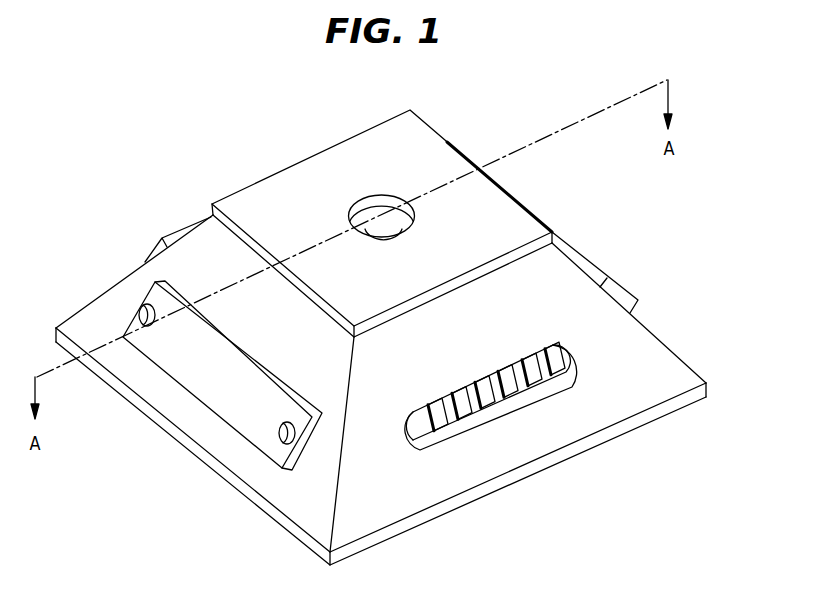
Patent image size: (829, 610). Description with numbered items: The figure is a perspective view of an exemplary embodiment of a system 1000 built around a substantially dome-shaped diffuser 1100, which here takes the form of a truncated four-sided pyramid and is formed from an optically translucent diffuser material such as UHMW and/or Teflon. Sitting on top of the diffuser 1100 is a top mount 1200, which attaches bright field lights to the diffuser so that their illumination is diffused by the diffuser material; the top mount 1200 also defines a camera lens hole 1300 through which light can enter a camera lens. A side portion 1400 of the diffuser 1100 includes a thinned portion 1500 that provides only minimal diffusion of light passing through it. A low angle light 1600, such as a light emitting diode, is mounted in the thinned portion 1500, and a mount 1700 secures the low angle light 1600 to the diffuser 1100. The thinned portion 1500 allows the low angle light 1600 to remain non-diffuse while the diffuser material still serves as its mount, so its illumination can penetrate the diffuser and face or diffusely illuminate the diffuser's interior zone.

The system 1000 is at (145, 98).
The diffuser 1100 is at (100, 295).
The top mount 1200 is at (316, 153).
The camera lens hole 1300 is at (387, 194).
The side portion 1400 is at (558, 273).
The thinned portion 1500 is at (583, 366).
The low angle light 1600 is at (514, 392).
The mount 1700 is at (237, 407).